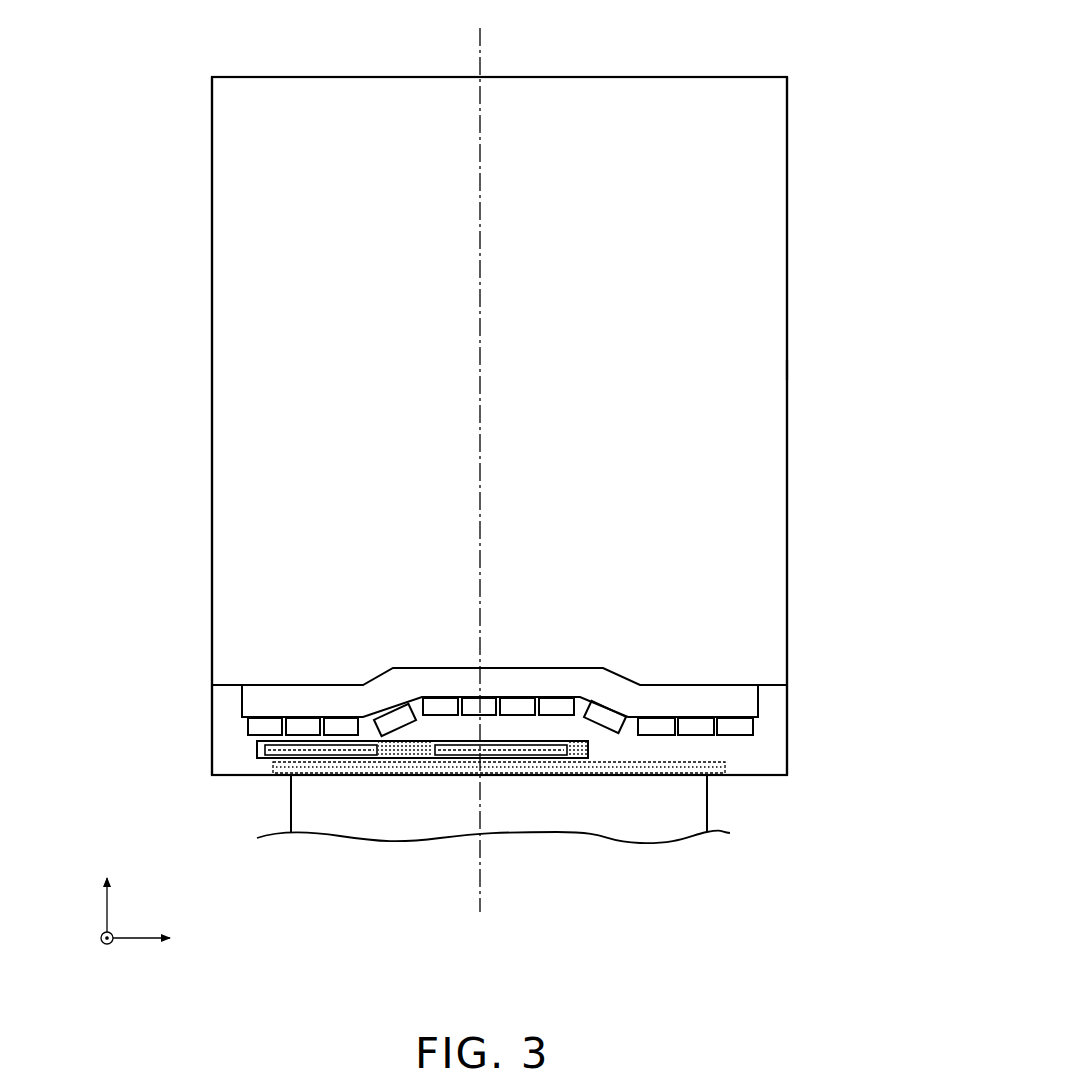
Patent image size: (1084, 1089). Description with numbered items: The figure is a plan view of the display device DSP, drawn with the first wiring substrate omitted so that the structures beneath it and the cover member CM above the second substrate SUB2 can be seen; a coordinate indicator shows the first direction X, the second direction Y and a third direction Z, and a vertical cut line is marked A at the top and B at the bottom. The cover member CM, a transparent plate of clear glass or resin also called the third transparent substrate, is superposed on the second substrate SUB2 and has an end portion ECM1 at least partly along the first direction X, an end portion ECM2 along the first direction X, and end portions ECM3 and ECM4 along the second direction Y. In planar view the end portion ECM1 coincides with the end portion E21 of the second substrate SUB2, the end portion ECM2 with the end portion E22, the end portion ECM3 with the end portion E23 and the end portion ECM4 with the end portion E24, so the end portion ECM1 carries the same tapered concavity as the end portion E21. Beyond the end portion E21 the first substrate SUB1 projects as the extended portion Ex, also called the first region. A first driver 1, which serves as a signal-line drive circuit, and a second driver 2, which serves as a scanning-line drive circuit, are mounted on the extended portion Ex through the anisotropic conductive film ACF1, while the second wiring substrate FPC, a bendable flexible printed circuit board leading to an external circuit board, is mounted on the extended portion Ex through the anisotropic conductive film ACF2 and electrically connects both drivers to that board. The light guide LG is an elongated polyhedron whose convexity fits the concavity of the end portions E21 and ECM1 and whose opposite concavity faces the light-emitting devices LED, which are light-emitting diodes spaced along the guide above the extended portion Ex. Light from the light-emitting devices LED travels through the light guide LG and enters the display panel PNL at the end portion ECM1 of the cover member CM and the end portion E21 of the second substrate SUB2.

The display panel PNL is at (574, 388).
The display device DSP is at (855, 65).
The cover member CM is at (849, 426).
The second substrate SUB2 is at (765, 233).
The first substrate SUB1 is at (777, 717).
The end portion of the cover member ECM1 is at (428, 647).
The end portion of the second substrate E21 is at (277, 687).
The end portion of the cover member ECM2 is at (499, 47).
The end portion of the second substrate E22 is at (307, 77).
The end portion of the cover member ECM3 is at (127, 426).
The end portion of the second substrate E23 is at (212, 370).
The end portion of the cover member ECM4 is at (869, 367).
The end portion of the second substrate E24 is at (788, 365).
The light guide LG is at (252, 702).
The extended portion Ex is at (225, 725).
The light-emitting devices LED is at (727, 722).
The anisotropic conductive film ACF1 is at (590, 747).
The anisotropic conductive film ACF2 is at (725, 765).
The first driver 1 is at (432, 743).
The second driver 2 is at (257, 752).
The second wiring substrate FPC is at (652, 832).
The section line end A is at (480, 475).
The section line end B is at (479, 488).
The first direction X is at (141, 902).
The second direction Y is at (125, 902).
The Z axis Z is at (125, 922).